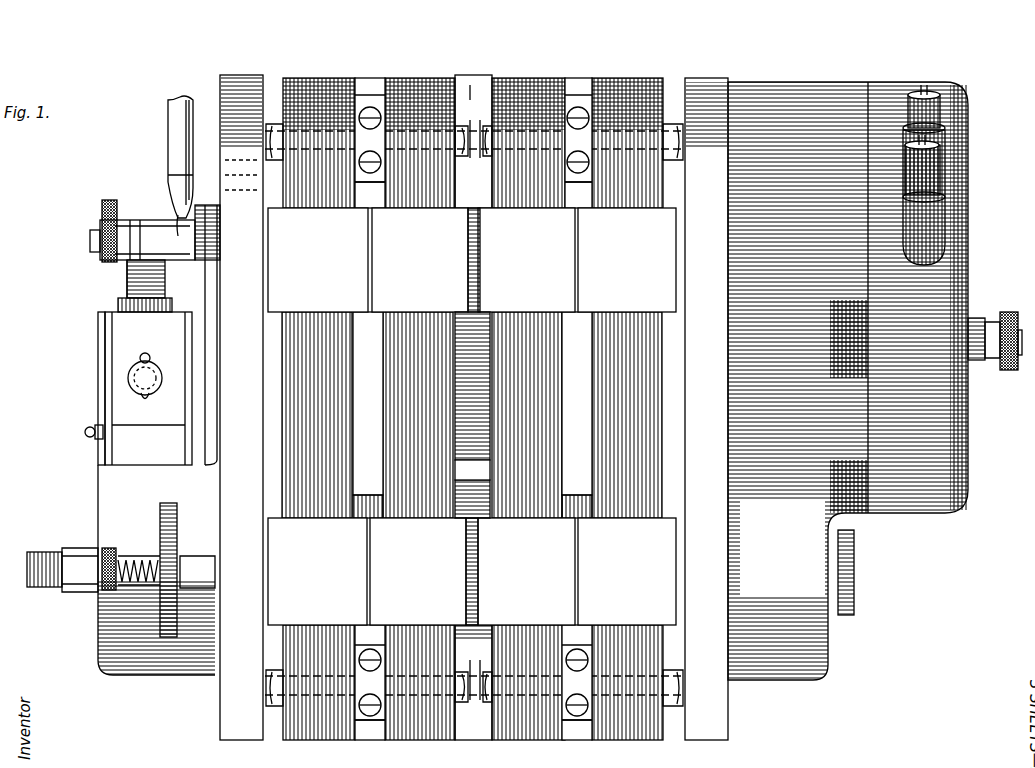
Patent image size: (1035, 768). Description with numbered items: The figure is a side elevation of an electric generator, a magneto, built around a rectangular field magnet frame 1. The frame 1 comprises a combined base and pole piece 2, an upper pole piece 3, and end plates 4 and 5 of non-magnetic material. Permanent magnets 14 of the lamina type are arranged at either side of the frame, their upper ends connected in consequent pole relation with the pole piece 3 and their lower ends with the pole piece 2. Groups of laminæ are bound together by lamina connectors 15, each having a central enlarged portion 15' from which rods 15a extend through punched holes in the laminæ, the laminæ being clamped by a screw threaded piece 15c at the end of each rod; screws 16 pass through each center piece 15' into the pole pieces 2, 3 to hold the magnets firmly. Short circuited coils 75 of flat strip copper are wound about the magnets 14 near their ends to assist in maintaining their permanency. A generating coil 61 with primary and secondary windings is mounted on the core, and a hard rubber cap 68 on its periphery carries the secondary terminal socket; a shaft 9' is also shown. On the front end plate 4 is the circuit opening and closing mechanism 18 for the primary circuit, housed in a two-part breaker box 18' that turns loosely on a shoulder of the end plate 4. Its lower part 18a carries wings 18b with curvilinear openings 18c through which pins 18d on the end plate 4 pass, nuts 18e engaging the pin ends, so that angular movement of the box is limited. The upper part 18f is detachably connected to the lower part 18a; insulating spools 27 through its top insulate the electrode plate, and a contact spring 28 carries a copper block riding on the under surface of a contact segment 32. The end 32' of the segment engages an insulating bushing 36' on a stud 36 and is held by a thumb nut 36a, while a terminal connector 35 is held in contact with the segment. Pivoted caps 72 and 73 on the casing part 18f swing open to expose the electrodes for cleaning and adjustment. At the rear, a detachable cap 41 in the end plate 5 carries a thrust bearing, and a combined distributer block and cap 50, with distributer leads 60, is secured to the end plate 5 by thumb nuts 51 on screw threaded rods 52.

The rectangular field magnet frame 1 is at (470, 85).
The combined base and pole piece 2 is at (470, 738).
The upper pole piece 3 is at (488, 75).
The end plate 4 is at (228, 752).
The end plate 5 is at (694, 752).
The shaft 9' is at (472, 476).
The permanent magnets 14 is at (618, 752).
The lamina connectors 15 is at (472, 421).
The central enlarged portion 15' is at (457, 471).
The rods 15a is at (472, 660).
The screw threaded piece 15c is at (488, 714).
The screws 16 is at (574, 680).
The circuit opening and closing mechanism 18 is at (81, 388).
The two-part breaker box 18' is at (81, 449).
The lower part of breaker box 18a is at (128, 690).
The wings 18b is at (160, 510).
The curvilinear opening 18c is at (62, 570).
The pins 18d is at (142, 548).
The nuts 18e is at (114, 538).
The upper part of breaker box 18f is at (148, 431).
The insulating spools 27 is at (118, 304).
The contact spring 28 is at (126, 282).
The contact segment 32 is at (157, 279).
The end of contact segment 32' is at (157, 195).
The terminal connector 35 is at (168, 138).
The stud 36 is at (119, 240).
The insulating bushing 36' is at (183, 329).
The thumb nut 36a is at (108, 200).
The detachable cap 41 is at (870, 565).
The combined distributer block and cap 50 is at (930, 505).
The thumb nuts 51 is at (1010, 312).
The screw threaded rod 52 is at (1008, 372).
The distributer leads 60 is at (905, 165).
The generating coil 61 is at (475, 330).
The hard rubber cap 68 is at (480, 250).
The pivoted cap 72 is at (105, 355).
The pivoted cap 73 is at (152, 364).
The short circuited coils 75 is at (472, 416).